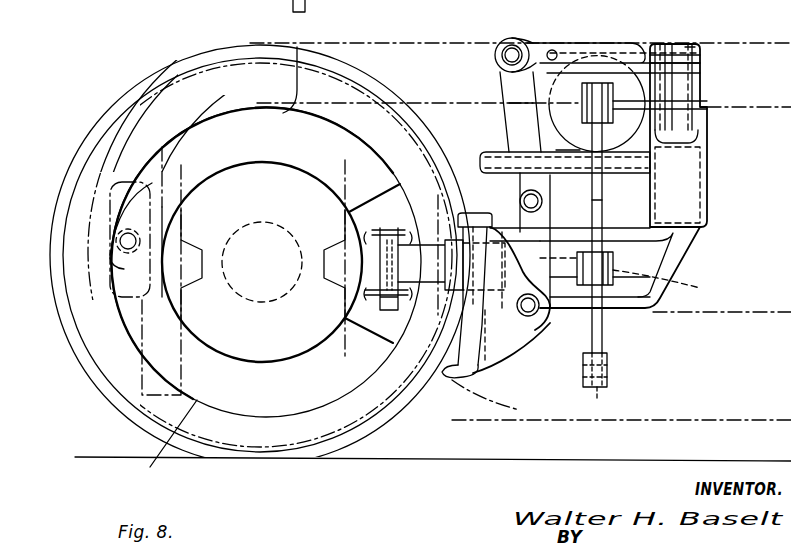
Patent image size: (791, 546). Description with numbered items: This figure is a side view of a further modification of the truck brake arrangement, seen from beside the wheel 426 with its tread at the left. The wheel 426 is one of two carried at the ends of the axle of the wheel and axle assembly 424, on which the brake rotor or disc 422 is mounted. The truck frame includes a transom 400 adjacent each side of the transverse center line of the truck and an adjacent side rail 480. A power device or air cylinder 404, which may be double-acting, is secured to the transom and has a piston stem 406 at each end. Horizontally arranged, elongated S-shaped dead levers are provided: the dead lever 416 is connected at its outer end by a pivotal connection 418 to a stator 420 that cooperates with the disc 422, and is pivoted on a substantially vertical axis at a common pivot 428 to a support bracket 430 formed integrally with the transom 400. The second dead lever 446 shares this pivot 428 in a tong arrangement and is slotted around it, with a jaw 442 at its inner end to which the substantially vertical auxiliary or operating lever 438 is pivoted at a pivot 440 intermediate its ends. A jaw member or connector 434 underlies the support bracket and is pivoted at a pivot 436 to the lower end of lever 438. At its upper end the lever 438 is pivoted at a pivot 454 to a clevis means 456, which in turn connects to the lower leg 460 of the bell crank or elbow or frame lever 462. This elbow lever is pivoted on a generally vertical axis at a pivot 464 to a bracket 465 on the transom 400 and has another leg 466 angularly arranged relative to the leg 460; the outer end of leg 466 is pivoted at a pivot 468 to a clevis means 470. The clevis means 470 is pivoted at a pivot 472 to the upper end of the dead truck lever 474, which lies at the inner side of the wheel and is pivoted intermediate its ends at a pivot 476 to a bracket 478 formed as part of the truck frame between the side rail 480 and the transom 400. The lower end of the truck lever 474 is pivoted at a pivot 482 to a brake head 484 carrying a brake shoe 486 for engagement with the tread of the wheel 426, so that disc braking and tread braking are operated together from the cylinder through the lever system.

The transom 400 is at (707, 204).
The power device or air cylinder 404 is at (620, 80).
The piston stem 406 is at (592, 120).
The dead lever 416 is at (432, 272).
The pivotal connection 418 is at (388, 310).
The stator 420 is at (377, 200).
The brake rotor or disc 422 is at (156, 443).
The wheel and axle assembly 424 is at (255, 296).
The wheel 426 is at (107, 407).
The pivot 428 is at (488, 225).
The support bracket 430 is at (628, 308).
The jaw member or connector 434 is at (607, 357).
The pivot 436 is at (612, 374).
The auxiliary or operating lever 438 is at (599, 203).
The pivot 440 is at (660, 278).
The jaw 442 is at (670, 262).
The dead lever 446 is at (565, 258).
The pivot 454 is at (505, 101).
The clevis means 456 is at (601, 80).
The lower leg 460 is at (633, 110).
The bell crank or elbow or frame lever 462 is at (700, 83).
The pivot 464 is at (690, 47).
The bracket 465 is at (692, 47).
The leg 466 is at (690, 58).
The pivot 468 is at (667, 45).
The clevis means 470 is at (565, 43).
The pivot 472 is at (511, 46).
The dead truck lever 474 is at (507, 86).
The pivot 476 is at (543, 201).
The bracket 478 is at (480, 156).
The side rail 480 is at (427, 45).
The pivot 482 is at (530, 318).
The brake head 484 is at (480, 368).
The brake shoe 486 is at (452, 378).